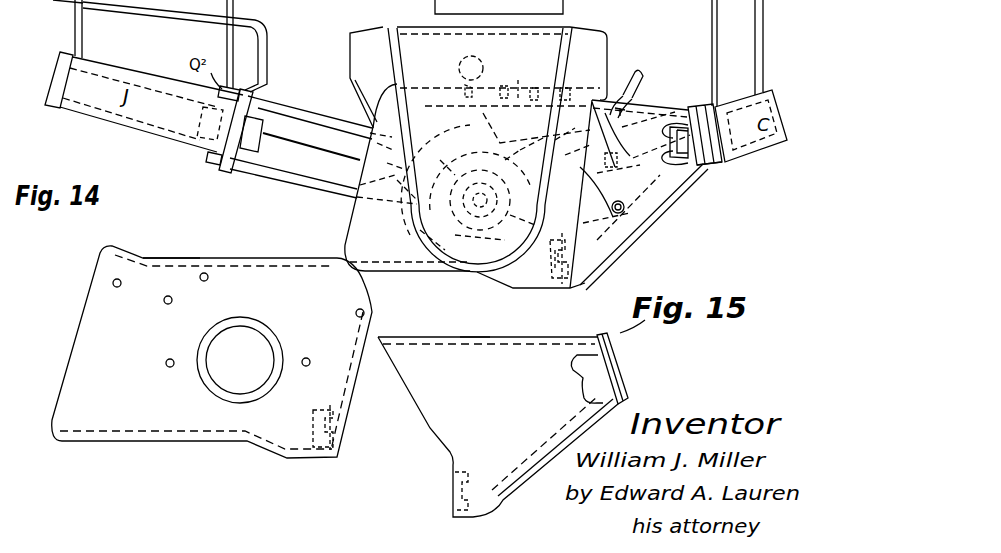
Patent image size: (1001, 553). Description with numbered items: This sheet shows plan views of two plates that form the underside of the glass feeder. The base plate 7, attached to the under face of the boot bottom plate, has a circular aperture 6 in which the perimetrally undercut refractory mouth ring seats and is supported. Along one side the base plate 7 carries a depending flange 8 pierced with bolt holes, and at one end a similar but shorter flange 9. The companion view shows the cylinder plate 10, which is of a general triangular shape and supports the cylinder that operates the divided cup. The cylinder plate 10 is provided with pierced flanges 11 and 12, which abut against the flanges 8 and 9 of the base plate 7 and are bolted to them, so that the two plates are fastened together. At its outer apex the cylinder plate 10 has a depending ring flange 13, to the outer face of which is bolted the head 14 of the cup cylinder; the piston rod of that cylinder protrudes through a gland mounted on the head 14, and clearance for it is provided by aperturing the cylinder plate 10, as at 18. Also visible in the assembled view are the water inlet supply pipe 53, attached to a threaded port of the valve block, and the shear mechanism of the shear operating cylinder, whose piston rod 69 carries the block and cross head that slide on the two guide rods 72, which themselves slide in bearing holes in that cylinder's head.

In FIG. 15, the circular aperture 6 is at (240, 360).
In FIG. 15, the base plate 7 is at (212, 352).
In FIG. 14, the depending flange 8 is at (463, 92).
In FIG. 15, the depending flange 8 is at (167, 260).
In FIG. 14, the flange 9 is at (545, 279).
In FIG. 15, the flange 9 is at (340, 431).
In FIG. 14, the cylinder plate 10 is at (639, 195).
In FIG. 15, the cylinder plate 10 is at (498, 427).
In FIG. 14, the pierced flange 11 is at (523, 79).
In FIG. 15, the pierced flange 11 is at (473, 336).
In FIG. 14, the pierced flange 12 is at (574, 276).
In FIG. 15, the pierced flange 12 is at (455, 483).
In FIG. 14, the depending ring flange 13 is at (690, 107).
In FIG. 15, the depending ring flange 13 is at (621, 396).
In FIG. 14, the cylinder head 14 is at (720, 163).
In FIG. 15, the aperture 18 is at (587, 379).
In FIG. 14, the water inlet supply pipe 53 is at (640, 88).
In FIG. 14, the piston rod 69 is at (300, 142).
In FIG. 14, the guide rods 72 is at (315, 180).